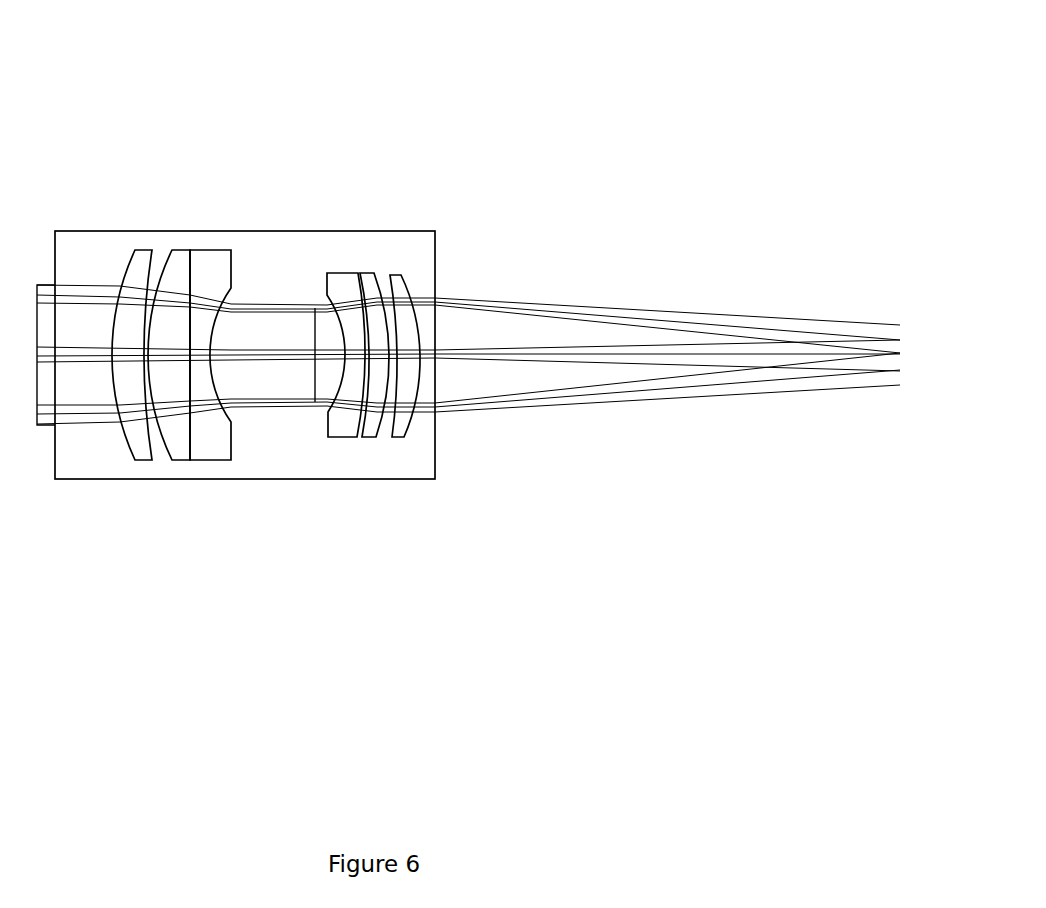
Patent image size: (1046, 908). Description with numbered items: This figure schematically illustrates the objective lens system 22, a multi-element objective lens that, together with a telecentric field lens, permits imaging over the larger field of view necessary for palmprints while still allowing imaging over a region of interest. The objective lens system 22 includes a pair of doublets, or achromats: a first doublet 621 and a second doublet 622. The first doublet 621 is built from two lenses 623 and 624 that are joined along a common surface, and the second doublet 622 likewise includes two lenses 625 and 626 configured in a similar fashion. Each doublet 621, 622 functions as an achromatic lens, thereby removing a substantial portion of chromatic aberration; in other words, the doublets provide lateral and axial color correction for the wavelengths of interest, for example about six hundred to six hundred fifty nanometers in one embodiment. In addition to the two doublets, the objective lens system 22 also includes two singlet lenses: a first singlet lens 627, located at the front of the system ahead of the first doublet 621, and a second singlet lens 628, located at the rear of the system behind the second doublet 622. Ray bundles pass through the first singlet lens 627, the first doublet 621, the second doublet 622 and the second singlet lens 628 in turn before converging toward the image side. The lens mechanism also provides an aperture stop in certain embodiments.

The objective lens system 22 is at (468, 290).
The first doublet 621 is at (201, 347).
The second doublet 622 is at (394, 350).
The lens 623 is at (180, 247).
The lens 624 is at (213, 247).
The lens 625 is at (328, 273).
The lens 626 is at (360, 273).
The first singlet lens 627 is at (137, 242).
The second singlet lens 628 is at (398, 273).